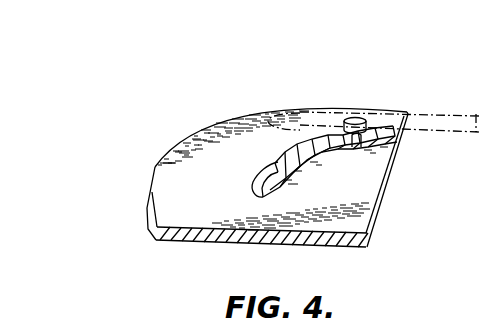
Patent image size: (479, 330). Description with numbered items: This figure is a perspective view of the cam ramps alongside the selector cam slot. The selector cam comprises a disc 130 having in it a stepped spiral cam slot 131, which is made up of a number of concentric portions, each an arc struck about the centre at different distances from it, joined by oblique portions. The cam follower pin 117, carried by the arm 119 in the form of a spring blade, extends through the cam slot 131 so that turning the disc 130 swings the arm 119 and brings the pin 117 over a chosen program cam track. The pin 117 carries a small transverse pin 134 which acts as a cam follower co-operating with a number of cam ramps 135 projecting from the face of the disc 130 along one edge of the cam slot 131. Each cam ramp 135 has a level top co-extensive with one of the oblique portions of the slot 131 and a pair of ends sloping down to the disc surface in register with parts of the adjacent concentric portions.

The selector cam disc 130 is at (218, 142).
The stepped spiral cam slot 131 is at (256, 173).
The transverse pin 134 is at (395, 152).
The cam ramps 135 is at (312, 160).
The cam follower pin 117 is at (357, 117).
The arm 119 is at (431, 116).